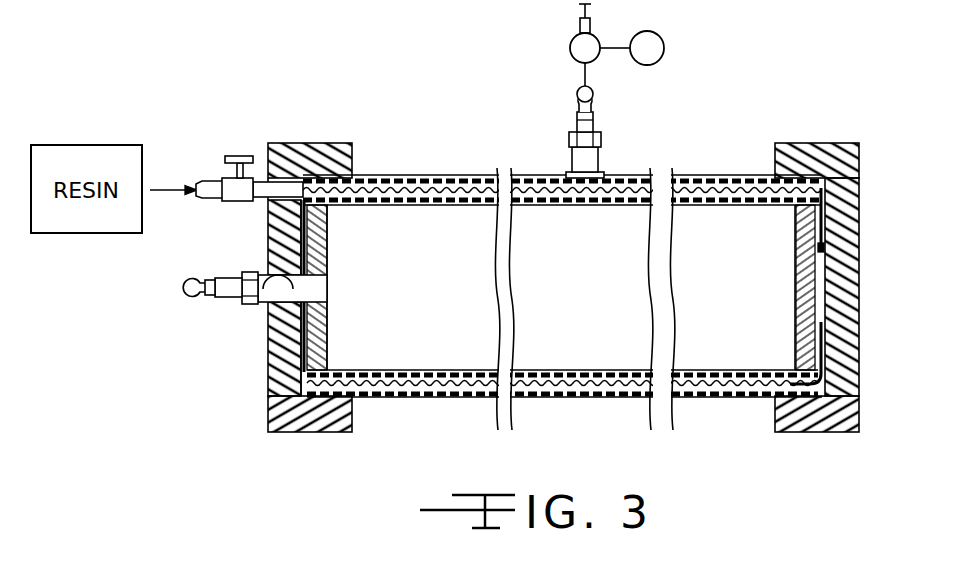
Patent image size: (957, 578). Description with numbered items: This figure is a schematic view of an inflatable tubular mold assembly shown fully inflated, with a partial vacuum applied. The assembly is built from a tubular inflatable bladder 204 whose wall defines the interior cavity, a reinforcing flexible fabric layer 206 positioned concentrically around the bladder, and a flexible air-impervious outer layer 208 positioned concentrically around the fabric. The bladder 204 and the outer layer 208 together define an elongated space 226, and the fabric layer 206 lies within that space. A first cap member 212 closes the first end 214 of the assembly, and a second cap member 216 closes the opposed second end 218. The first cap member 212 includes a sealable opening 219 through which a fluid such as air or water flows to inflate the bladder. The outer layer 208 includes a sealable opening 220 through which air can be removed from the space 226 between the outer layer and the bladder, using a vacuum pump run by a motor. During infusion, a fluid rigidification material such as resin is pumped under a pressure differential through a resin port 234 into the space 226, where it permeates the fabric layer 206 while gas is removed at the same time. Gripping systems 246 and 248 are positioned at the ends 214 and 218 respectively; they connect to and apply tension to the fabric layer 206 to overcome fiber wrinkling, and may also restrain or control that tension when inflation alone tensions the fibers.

The inflatable bladder 204 is at (390, 203).
The flexible fabric layer 206 is at (427, 177).
The air-impervious outer layer 208 is at (448, 178).
The first cap member 212 is at (280, 318).
The first end 214 is at (258, 421).
The second cap member 216 is at (828, 288).
The second end 218 is at (866, 156).
The sealable opening 219 is at (258, 272).
The sealable opening 220 is at (600, 172).
The elongated space 226 is at (541, 178).
The resin port 234 is at (258, 178).
The gripping system 246 is at (318, 433).
The gripping system 248 is at (783, 433).